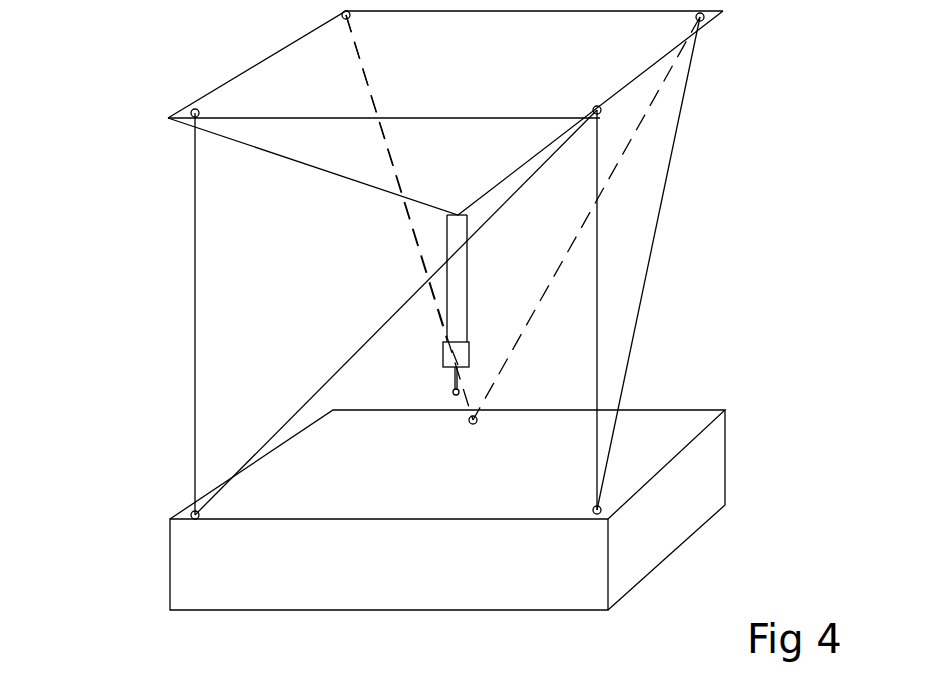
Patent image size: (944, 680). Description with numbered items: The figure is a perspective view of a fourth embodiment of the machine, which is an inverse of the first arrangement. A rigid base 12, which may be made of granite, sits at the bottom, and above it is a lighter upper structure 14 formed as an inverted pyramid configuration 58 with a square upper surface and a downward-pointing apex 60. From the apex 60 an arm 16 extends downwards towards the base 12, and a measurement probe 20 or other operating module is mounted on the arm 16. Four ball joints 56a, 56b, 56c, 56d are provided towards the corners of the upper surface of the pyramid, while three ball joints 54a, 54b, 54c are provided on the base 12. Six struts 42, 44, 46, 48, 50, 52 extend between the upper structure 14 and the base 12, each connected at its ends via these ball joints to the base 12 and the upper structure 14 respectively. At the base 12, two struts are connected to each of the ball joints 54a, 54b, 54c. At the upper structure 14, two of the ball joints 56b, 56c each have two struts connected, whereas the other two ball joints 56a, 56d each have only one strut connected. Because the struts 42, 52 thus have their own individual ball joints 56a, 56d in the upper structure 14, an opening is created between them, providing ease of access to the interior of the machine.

The base 12 is at (190, 587).
The upper structure 14 is at (625, 67).
The arm 16 is at (466, 318).
The measurement probe 20 is at (443, 352).
The strut 42 is at (195, 350).
The strut 44 is at (253, 316).
The strut 46 is at (422, 262).
The strut 48 is at (556, 273).
The strut 50 is at (657, 262).
The strut 52 is at (597, 348).
The ball joint 54a is at (200, 513).
The ball joint 54b is at (465, 423).
The ball joint 54c is at (592, 510).
The ball joint 56a is at (190, 109).
The ball joint 56b is at (340, 17).
The ball joint 56c is at (707, 30).
The ball joint 56d is at (593, 106).
The inverted pyramid configuration 58 is at (400, 197).
The apex 60 is at (467, 215).